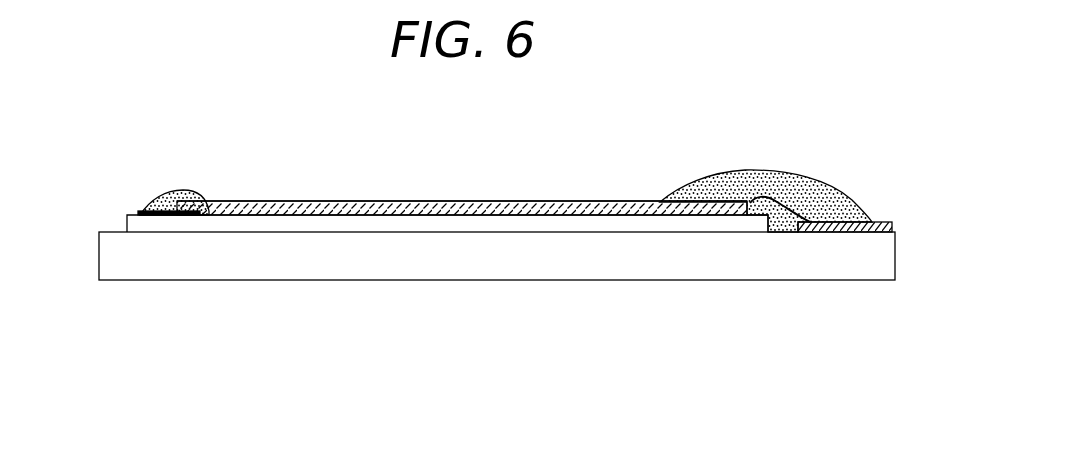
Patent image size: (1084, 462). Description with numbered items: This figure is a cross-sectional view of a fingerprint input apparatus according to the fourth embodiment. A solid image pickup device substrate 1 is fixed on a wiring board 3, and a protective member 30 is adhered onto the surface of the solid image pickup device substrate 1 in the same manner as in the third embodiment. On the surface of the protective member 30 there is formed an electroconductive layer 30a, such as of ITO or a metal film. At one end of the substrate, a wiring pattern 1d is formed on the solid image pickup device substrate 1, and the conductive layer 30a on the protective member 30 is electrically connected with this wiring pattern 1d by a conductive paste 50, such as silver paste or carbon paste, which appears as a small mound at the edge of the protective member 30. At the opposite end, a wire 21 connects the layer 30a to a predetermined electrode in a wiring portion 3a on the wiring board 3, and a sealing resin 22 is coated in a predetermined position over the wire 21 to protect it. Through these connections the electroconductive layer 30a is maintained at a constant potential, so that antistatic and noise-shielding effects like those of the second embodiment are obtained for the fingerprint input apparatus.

The solid image pickup device substrate 1 is at (235, 224).
The wiring pattern 1d is at (141, 211).
The wiring board 3 is at (565, 267).
The wiring portion 3a is at (890, 222).
The wire 21 is at (750, 203).
The sealing resin 22 is at (783, 170).
The protective member 30 is at (413, 217).
The electroconductive layer 30a is at (397, 202).
The conductive paste 50 is at (188, 190).